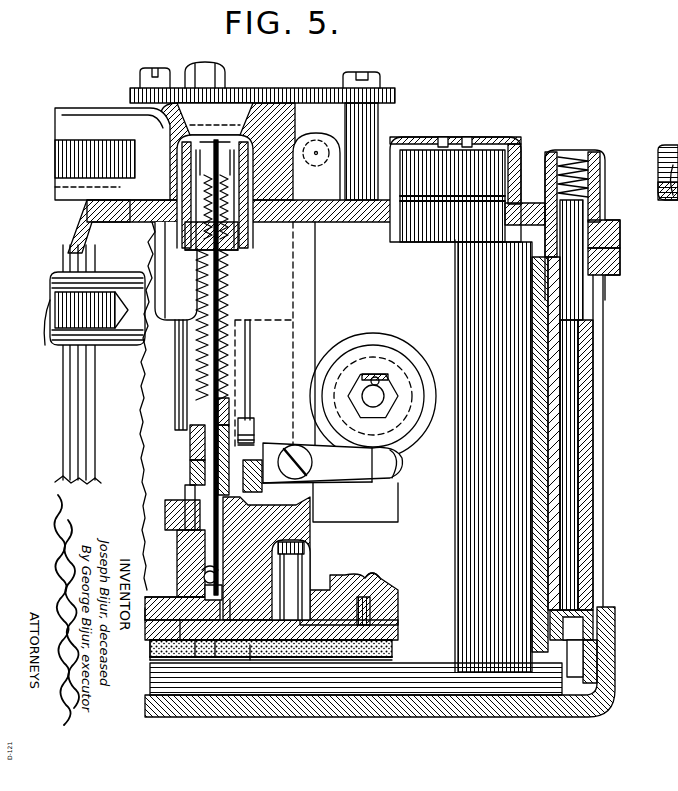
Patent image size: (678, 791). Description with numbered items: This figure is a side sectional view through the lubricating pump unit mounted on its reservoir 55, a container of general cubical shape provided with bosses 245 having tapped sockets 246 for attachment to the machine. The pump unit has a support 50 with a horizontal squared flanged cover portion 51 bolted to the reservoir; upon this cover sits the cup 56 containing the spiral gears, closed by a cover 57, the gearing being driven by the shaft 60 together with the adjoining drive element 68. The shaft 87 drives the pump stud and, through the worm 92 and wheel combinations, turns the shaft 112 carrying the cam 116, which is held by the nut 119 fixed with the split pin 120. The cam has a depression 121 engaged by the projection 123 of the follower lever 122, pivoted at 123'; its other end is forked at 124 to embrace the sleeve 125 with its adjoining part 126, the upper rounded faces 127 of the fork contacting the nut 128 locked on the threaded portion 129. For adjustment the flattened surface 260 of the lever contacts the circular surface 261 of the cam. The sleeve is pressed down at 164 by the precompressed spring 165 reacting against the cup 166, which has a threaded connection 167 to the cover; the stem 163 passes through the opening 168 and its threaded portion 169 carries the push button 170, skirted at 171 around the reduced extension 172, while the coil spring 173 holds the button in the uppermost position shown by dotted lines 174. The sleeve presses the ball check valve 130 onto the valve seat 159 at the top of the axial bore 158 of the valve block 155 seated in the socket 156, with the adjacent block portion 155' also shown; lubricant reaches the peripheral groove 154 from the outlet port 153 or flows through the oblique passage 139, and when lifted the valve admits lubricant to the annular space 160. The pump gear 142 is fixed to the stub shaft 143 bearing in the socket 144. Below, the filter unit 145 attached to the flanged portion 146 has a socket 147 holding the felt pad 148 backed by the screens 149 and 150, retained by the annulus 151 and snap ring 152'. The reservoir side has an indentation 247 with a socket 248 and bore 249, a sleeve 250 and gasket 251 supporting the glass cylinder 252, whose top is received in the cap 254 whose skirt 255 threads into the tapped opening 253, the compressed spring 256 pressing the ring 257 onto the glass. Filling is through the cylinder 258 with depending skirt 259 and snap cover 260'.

The support 50 is at (165, 291).
The flanged cover portion 51 is at (527, 203).
The reservoir 55 is at (68, 407).
The cup 56 is at (372, 118).
The cover 57 is at (372, 92).
The shaft 60 is at (668, 146).
The connection element 68 is at (677, 126).
The shaft 87 is at (252, 367).
The worm 92 is at (258, 460).
The shaft 112 is at (368, 392).
The cam 116 is at (392, 348).
The nut 119 is at (385, 405).
The split pin 120 is at (383, 382).
The depression 121 is at (405, 445).
The follower lever 122 is at (340, 455).
The projection 123 is at (422, 464).
The pivot 123' is at (269, 423).
The fork 124 is at (225, 490).
The sleeve 125 is at (240, 503).
The guide bushing 126 is at (190, 512).
The upper rounded faces 127 is at (192, 462).
The nut 128 is at (192, 437).
The upper threaded portion 129 is at (192, 432).
The ball check valve 130 is at (204, 578).
The oblique passage 139 is at (250, 655).
The gear 142 is at (374, 586).
The stub shaft 143 is at (312, 577).
The socket 144 is at (300, 558).
The filter unit 145 is at (400, 630).
The flanged portion 146 is at (400, 605).
The socket 147 is at (163, 608).
The felt pad 148 is at (295, 657).
The screen 149 is at (180, 622).
The screen 150 is at (160, 640).
The annulus 151 is at (165, 600).
The snap ring 152' is at (295, 659).
The outlet port 153 is at (330, 528).
The peripheral groove 154 is at (165, 615).
The valve block 155 is at (179, 585).
The valve seat passage 155' is at (250, 691).
The socket 156 is at (215, 645).
The axial bore 158 is at (195, 640).
The valve seat 159 is at (200, 572).
The annular space 160 is at (195, 537).
The stem 163 is at (213, 340).
The spring pressing point 164 is at (230, 405).
The precompressed spring 165 is at (228, 292).
The cup 166 is at (238, 247).
The threaded connection 167 is at (222, 190).
The opening 168 is at (188, 240).
The upper threaded portion 169 is at (242, 140).
The push button 170 is at (192, 140).
The skirt 171 is at (185, 155).
The upper reduced extension 172 is at (185, 165).
The coil spring 173 is at (225, 182).
The dotted lines 174 is at (225, 125).
The bosses 245 is at (62, 282).
The tapped sockets 246 is at (50, 322).
The indentation 247 is at (545, 402).
The socket 248 is at (595, 618).
The bore 249 is at (585, 658).
The sleeve 250 is at (590, 645).
The gasket 251 is at (583, 630).
The glass cylinder 252 is at (590, 432).
The tapped opening 253 is at (620, 262).
The cap 254 is at (607, 170).
The skirt 255 is at (620, 238).
The compressed spring 256 is at (598, 148).
The ring 257 is at (600, 215).
The cylinder 258 is at (395, 232).
The depending skirt 259 is at (500, 238).
The flattened surface 260 is at (336, 471).
The snap cover 260' is at (530, 165).
The circular surface 261 is at (372, 478).